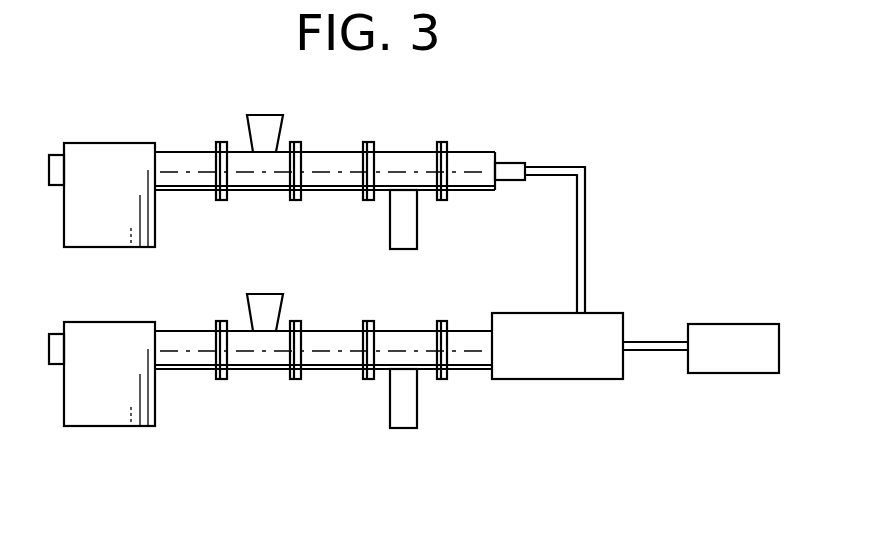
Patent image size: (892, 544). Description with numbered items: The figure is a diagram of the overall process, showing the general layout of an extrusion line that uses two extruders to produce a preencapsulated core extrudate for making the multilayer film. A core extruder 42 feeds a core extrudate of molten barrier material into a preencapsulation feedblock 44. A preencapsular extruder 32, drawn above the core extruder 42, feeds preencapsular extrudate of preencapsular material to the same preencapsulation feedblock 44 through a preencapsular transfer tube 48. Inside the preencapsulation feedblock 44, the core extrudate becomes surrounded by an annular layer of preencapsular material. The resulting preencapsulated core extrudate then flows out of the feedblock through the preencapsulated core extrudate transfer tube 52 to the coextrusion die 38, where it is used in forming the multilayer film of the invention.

The preencapsular extruder 32 is at (385, 152).
The core extruder 42 is at (273, 369).
The preencapsular transfer tube 48 is at (585, 211).
The preencapsulation feedblock 44 is at (543, 372).
The preencapsulated core extrudate transfer tube 52 is at (654, 352).
The coextrusion die 38 is at (722, 324).